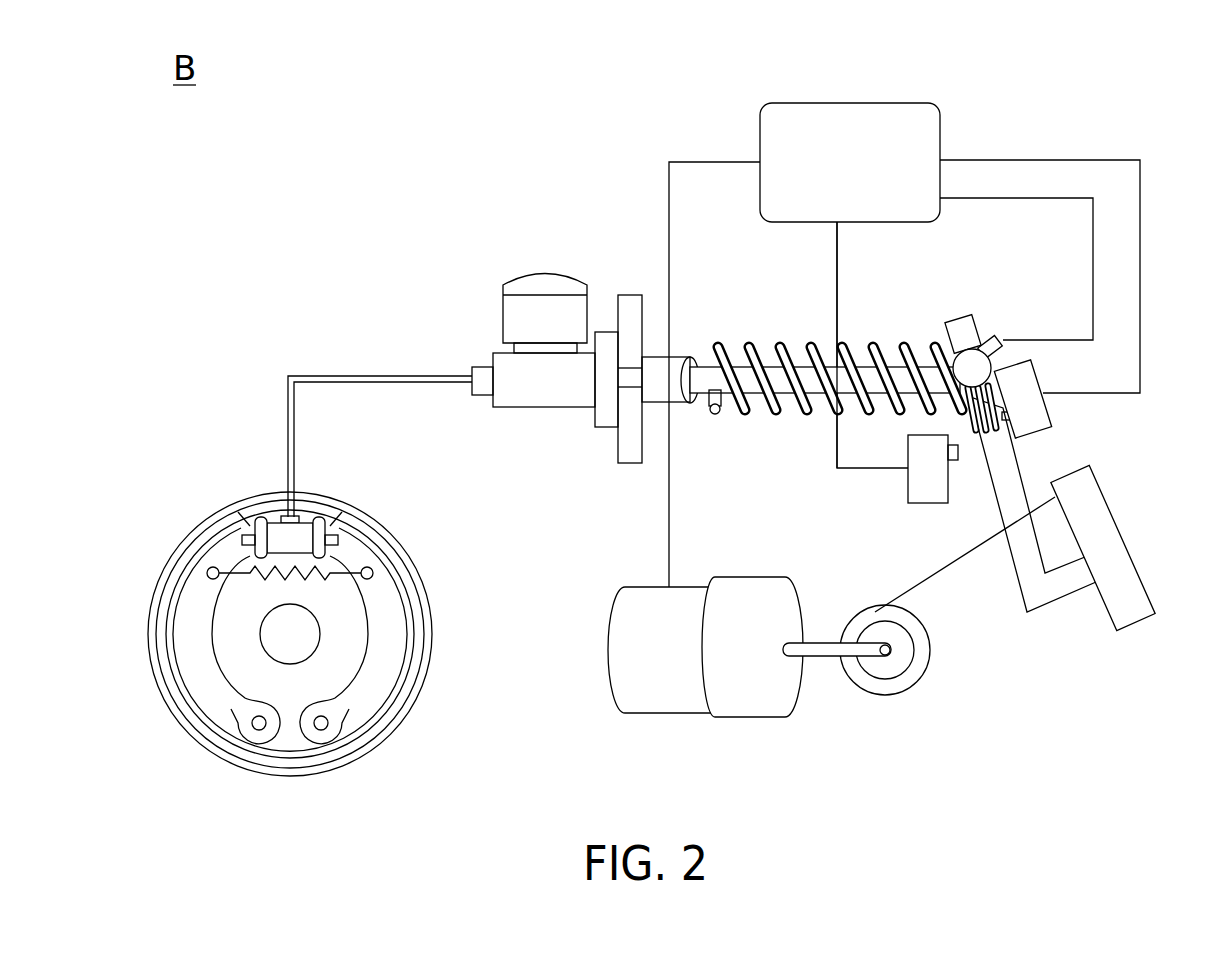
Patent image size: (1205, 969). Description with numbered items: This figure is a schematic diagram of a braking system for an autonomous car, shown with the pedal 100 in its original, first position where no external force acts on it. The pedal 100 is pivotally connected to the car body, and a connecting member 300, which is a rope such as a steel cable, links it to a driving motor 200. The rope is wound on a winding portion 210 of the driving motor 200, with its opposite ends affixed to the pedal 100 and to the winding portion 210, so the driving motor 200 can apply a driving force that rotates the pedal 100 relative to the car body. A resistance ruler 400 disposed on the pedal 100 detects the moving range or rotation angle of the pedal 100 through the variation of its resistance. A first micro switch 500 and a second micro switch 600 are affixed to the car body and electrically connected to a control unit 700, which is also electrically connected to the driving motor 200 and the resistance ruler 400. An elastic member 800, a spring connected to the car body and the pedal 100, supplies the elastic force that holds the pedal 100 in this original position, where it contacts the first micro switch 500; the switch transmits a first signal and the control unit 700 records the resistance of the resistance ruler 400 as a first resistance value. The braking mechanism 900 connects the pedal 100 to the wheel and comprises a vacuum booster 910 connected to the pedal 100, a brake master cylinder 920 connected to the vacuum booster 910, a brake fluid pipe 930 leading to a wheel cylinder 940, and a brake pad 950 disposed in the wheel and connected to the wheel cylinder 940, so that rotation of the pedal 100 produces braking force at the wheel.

The pedal 100 is at (1063, 590).
The driving motor 200 is at (752, 718).
The winding portion 210 is at (883, 695).
The connecting member 300 is at (957, 570).
The resistance ruler 400 is at (980, 428).
The first micro switch 500 is at (1043, 417).
The second micro switch 600 is at (908, 490).
The control unit 700 is at (852, 126).
The elastic member 800 is at (752, 340).
The braking mechanism 900 is at (462, 223).
The vacuum booster 910 is at (632, 305).
The brake master cylinder 920 is at (542, 305).
The brake fluid pipe 930 is at (323, 367).
The wheel cylinder 940 is at (275, 533).
The brake pad 950 is at (347, 712).